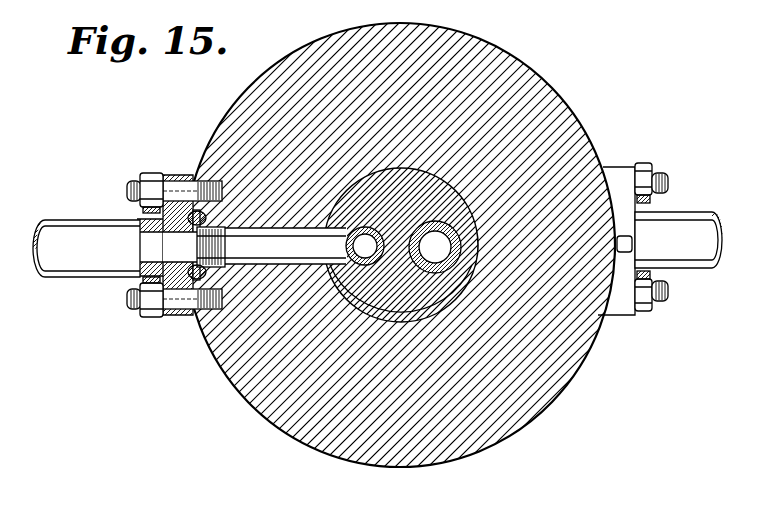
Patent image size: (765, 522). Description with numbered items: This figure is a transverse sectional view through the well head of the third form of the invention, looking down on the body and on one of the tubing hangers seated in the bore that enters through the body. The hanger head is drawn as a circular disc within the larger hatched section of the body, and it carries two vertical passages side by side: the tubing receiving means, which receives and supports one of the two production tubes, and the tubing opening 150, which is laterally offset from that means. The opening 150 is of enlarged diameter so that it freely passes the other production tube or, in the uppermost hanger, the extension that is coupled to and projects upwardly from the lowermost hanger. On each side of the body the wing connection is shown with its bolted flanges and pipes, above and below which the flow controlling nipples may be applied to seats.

The tubing opening 150 is at (460, 248).